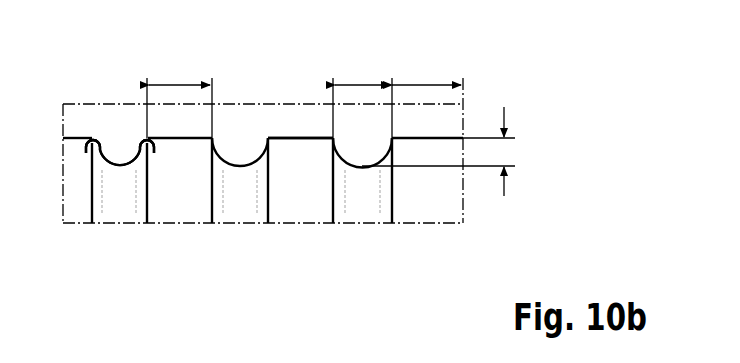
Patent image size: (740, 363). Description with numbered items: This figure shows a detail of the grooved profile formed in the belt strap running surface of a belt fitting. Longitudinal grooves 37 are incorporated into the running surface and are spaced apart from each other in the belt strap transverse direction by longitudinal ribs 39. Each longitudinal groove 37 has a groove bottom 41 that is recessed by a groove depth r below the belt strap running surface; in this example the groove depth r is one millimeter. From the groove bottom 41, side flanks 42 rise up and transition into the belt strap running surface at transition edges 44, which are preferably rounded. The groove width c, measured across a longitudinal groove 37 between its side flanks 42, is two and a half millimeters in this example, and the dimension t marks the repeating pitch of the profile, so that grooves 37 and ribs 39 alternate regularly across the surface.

The longitudinal groove 37 is at (240, 224).
The longitudinal rib 39 is at (298, 224).
The groove bottom 41 is at (116, 165).
The side flank 42 is at (86, 153).
The transition edge 44 is at (93, 140).
The pitch t is at (182, 85).
The groove width c is at (366, 85).
The groove depth r is at (504, 152).